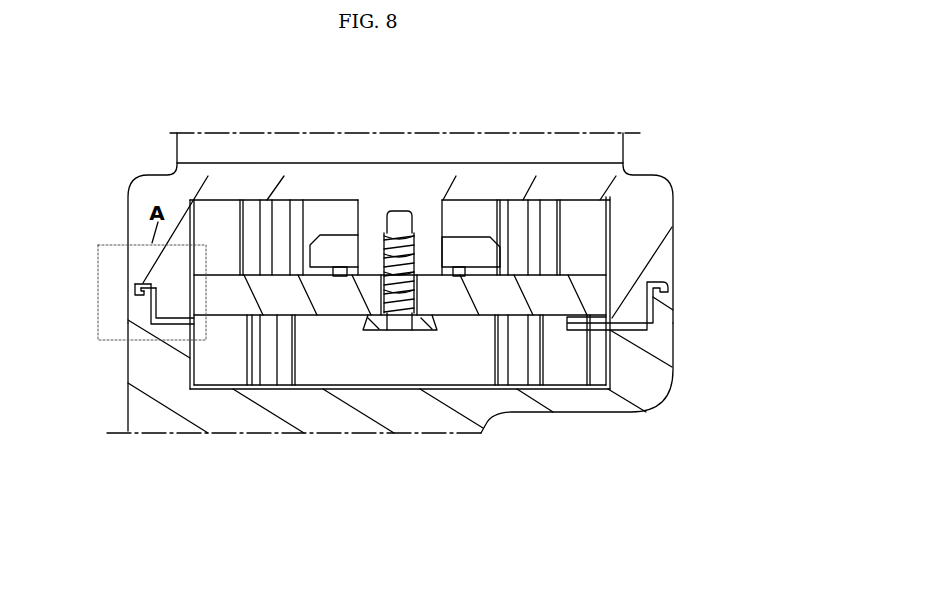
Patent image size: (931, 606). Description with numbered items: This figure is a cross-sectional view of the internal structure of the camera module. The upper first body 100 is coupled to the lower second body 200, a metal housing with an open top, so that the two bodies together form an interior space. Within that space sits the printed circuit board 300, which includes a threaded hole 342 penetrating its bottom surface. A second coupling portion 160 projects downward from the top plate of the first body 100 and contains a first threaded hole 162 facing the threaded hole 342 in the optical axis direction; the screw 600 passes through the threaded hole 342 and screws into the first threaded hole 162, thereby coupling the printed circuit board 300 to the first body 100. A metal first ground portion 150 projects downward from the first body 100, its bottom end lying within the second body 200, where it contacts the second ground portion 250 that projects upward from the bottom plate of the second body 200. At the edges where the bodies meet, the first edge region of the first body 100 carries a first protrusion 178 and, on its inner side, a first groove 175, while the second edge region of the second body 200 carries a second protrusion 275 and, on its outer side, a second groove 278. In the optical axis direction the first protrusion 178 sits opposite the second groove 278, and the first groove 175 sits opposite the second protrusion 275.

The first body 100 is at (677, 187).
The second body 200 is at (674, 399).
The first ground portion 150 is at (273, 223).
The second coupling portion 160 is at (372, 233).
The first threaded hole 162 is at (412, 233).
The threaded hole 342 is at (423, 277).
The printed circuit board 300 is at (592, 285).
The screw 600 is at (410, 330).
The second ground portion 250 is at (172, 336).
The first groove 175 is at (141, 280).
The second protrusion 275 is at (147, 298).
The second groove 278 is at (130, 292).
The first protrusion 178 is at (131, 291).